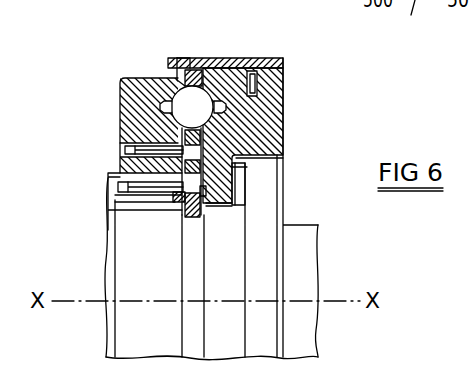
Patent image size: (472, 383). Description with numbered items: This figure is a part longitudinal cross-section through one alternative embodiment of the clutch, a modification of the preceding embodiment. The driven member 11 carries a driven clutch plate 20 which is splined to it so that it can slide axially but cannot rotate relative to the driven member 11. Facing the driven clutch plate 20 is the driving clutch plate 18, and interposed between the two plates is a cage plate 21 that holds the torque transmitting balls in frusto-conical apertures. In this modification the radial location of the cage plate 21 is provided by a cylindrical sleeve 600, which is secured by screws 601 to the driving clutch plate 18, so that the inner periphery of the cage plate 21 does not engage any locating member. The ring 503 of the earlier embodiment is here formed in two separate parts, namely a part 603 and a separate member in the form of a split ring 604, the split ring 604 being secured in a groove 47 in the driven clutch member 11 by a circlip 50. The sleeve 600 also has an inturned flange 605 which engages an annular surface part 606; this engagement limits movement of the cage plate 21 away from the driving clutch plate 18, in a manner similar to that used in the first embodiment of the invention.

The driven member 11 is at (211, 209).
The driving clutch plate 18 is at (285, 82).
The driven clutch plate 20 is at (121, 82).
The cage plate 21 is at (197, 70).
The groove 47 is at (203, 275).
The circlip 50 is at (200, 190).
The ring 503 is at (407, 36).
The cylindrical sleeve 600 is at (229, 58).
The screws 601 is at (255, 66).
The ring part 603 is at (183, 207).
The split ring 604 is at (203, 205).
The inturned flange 605 is at (168, 67).
The annular surface part 606 is at (179, 58).